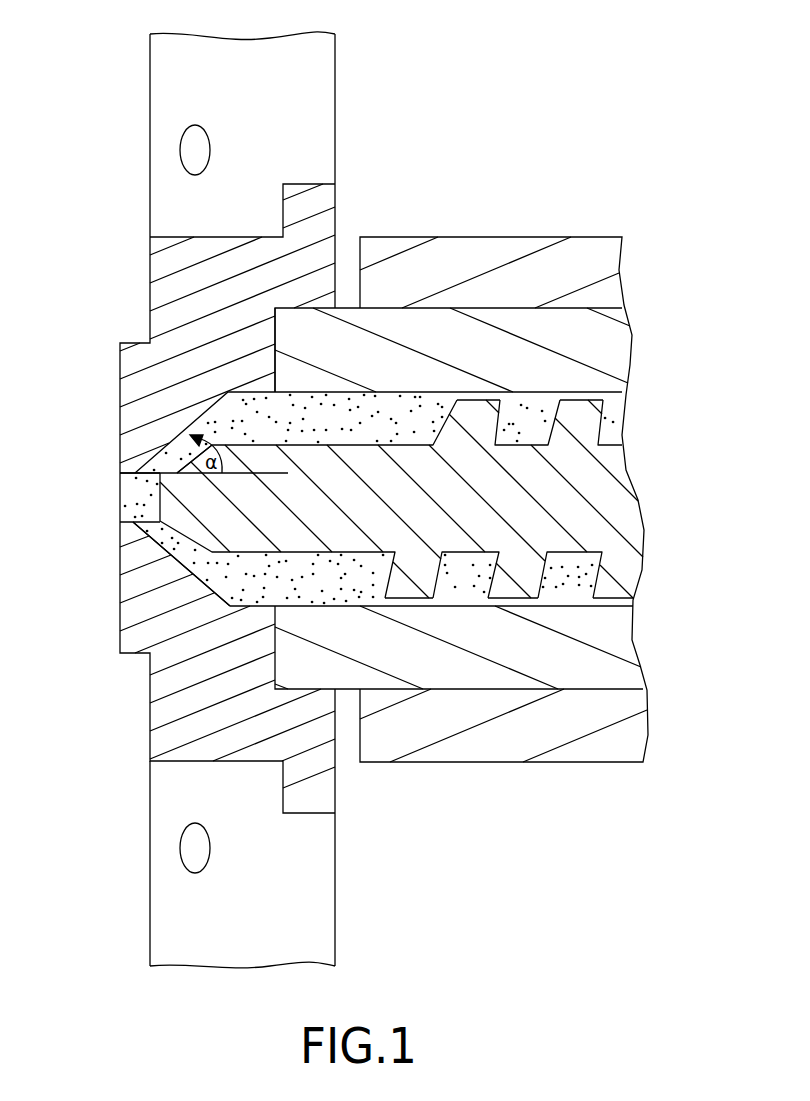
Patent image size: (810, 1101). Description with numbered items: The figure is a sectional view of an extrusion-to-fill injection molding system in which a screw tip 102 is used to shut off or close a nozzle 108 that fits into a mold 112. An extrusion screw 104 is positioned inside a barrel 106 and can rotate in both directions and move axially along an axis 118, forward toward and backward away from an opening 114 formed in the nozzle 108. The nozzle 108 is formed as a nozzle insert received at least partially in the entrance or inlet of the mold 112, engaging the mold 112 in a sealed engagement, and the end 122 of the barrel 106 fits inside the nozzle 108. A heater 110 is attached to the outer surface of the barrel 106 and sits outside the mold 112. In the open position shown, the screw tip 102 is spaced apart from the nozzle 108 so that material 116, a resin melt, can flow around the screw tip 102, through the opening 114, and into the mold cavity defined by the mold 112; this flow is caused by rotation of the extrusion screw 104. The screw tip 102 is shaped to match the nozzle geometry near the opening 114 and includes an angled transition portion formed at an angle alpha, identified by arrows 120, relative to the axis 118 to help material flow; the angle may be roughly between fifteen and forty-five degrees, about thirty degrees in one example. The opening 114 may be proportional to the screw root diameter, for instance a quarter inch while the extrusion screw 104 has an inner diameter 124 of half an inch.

The screw tip 102 is at (173, 517).
The extrusion screw 104 is at (603, 495).
The barrel 106 is at (615, 355).
The nozzle 108 is at (172, 292).
The heater 110 is at (597, 260).
The mold 112 is at (315, 88).
The opening 114 is at (125, 505).
The material 116 is at (182, 447).
The axis 118 is at (270, 472).
The arrows 120 is at (212, 474).
The end of the barrel 122 is at (280, 347).
The inner diameter 124 is at (367, 445).